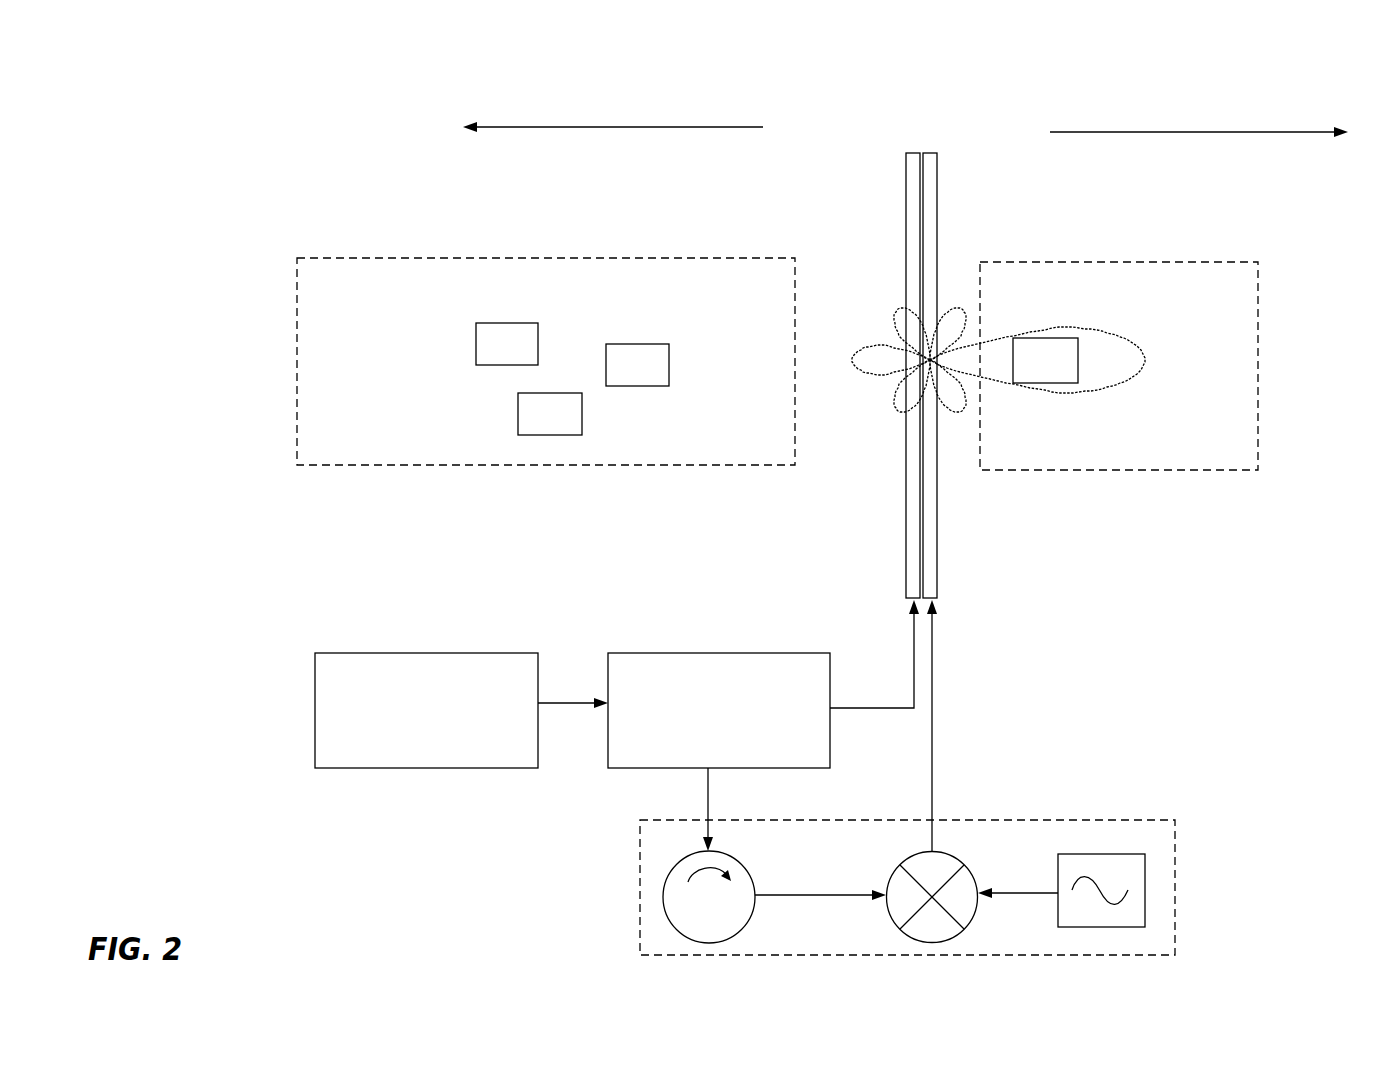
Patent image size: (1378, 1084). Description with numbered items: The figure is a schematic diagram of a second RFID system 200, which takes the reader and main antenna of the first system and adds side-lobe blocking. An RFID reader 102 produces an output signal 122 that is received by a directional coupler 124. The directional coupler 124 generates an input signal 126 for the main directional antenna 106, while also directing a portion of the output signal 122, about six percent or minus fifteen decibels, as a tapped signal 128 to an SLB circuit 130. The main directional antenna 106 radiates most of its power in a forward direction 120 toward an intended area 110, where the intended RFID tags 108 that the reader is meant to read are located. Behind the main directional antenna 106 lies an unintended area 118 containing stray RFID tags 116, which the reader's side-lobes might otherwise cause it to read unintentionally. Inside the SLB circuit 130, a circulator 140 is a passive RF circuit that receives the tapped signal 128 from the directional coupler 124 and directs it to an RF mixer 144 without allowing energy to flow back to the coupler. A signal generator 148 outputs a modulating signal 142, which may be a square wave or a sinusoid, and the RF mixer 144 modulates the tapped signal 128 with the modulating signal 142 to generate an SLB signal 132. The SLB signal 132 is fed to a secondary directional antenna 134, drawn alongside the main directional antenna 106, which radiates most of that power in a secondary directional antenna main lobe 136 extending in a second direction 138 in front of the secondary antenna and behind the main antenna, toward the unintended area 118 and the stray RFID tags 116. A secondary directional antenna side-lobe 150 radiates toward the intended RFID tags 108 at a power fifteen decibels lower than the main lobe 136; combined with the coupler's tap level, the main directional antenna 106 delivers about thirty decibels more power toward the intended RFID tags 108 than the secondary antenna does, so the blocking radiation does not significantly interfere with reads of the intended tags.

The second RFID system 200 is at (185, 93).
The forward direction 120 is at (627, 127).
The second direction 138 is at (1213, 132).
The intended area 110 is at (565, 258).
The intended RFID tags 108 is at (488, 356).
The main directional antenna 106 is at (906, 178).
The secondary directional antenna 134 is at (937, 187).
The secondary directional antenna side-lobe 150 is at (875, 343).
The secondary directional antenna main lobe 136 is at (1100, 327).
The unintended area 118 is at (1258, 327).
The stray RFID tags 116 is at (1026, 372).
The RFID reader 102 is at (408, 737).
The output signal 122 is at (556, 698).
The directional coupler 124 is at (700, 737).
The input signal 126 is at (882, 708).
The SLB signal 132 is at (933, 740).
The tapped signal 128 is at (707, 792).
The SLB circuit 130 is at (1135, 820).
The circulator 140 is at (738, 862).
The RF mixer 144 is at (903, 858).
The signal generator 148 is at (1058, 860).
The modulating signal 142 is at (1030, 895).